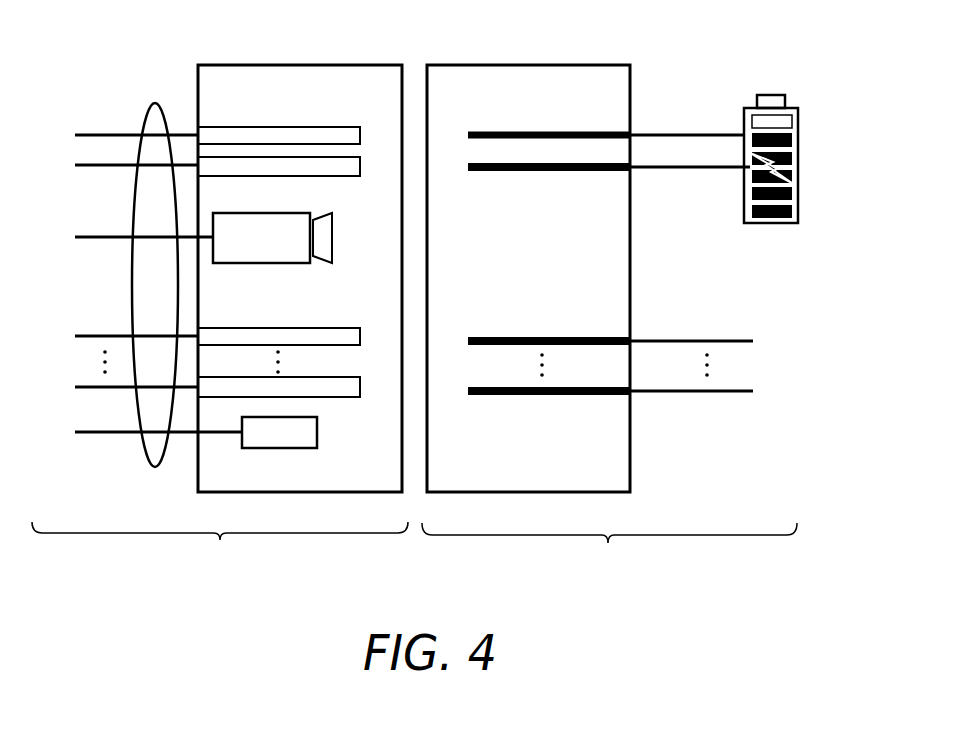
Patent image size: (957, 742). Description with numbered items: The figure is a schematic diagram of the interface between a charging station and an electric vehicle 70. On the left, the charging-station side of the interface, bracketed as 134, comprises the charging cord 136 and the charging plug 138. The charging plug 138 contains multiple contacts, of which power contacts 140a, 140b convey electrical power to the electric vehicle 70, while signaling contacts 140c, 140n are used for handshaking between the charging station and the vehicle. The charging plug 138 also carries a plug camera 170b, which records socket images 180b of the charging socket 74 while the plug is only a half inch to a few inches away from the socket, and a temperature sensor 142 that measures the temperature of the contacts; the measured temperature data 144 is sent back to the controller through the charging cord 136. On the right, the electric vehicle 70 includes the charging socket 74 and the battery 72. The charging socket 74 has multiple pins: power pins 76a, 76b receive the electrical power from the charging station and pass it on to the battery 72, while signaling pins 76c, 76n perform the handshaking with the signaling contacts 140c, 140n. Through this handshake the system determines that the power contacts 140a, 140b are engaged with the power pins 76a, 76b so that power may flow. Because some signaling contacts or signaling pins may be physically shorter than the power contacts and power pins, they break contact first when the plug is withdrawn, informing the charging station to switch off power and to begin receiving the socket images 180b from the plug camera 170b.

The electric vehicle 70 is at (608, 543).
The battery 72 is at (792, 170).
The charging socket 74 is at (528, 65).
The power pin 76a is at (567, 131).
The power pin 76b is at (567, 172).
The signaling pin 76c is at (567, 337).
The signaling pin 76n is at (567, 395).
The charging device 134 is at (220, 540).
The charging cord 136 is at (153, 103).
The charging plug 138 is at (297, 65).
The power contact 140a is at (300, 127).
The power contact 140b is at (338, 176).
The signaling contact 140c is at (338, 328).
The signaling contact 140n is at (338, 397).
The temperature sensor 142 is at (283, 448).
The measured temperature data 144 is at (108, 433).
The plug camera 170b is at (262, 263).
The socket images 180b is at (93, 237).